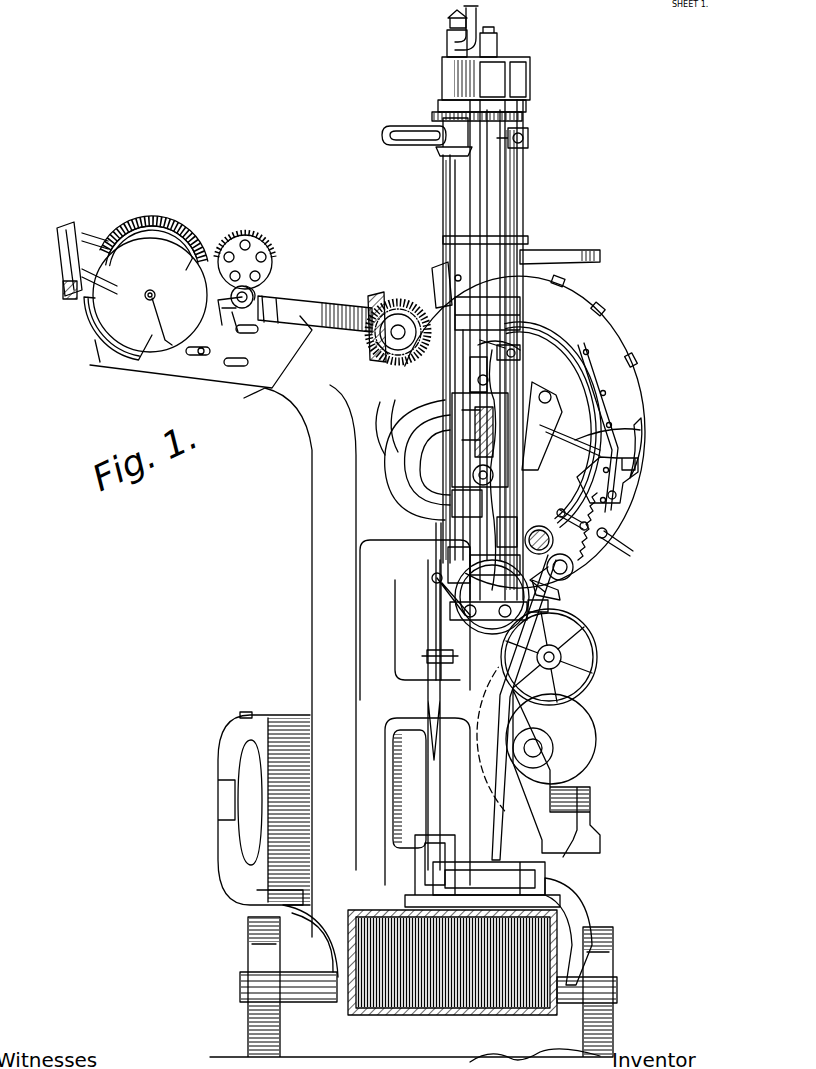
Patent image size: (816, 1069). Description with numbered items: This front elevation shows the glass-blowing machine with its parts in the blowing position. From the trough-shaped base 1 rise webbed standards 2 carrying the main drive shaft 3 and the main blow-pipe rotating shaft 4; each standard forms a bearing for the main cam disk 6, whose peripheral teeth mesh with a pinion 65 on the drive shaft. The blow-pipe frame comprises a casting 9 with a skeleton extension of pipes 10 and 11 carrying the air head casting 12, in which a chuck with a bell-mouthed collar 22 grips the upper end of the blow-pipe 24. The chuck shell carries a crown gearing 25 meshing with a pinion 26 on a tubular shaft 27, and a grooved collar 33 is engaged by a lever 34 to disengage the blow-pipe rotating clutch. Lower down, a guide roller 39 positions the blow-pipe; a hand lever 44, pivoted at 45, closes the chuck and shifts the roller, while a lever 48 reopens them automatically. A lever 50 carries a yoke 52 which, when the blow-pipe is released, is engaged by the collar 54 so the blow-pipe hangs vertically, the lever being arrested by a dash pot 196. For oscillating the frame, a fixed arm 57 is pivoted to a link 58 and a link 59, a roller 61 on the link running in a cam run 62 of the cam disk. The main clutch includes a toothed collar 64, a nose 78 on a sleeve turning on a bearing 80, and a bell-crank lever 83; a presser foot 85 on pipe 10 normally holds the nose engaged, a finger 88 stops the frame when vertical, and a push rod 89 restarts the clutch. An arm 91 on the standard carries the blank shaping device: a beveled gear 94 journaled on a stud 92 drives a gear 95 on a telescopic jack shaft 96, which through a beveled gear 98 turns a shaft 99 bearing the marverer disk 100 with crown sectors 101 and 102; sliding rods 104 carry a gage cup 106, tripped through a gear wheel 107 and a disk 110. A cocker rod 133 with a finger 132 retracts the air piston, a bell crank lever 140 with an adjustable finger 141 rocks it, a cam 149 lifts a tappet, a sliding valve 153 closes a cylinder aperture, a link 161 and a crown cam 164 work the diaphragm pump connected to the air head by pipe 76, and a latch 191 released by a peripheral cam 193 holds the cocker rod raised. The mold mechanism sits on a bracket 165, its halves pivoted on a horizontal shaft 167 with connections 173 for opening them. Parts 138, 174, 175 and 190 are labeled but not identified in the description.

The trough-shaped base 1 is at (462, 1005).
The webbed standard 2 is at (340, 585).
The main drive shaft 3 is at (573, 570).
The main blow-pipe rotating shaft 4 is at (420, 470).
The cam disk 6 is at (562, 420).
The blow-pipe frame casting 9 is at (440, 510).
The pipe 10 is at (470, 198).
The pipe 11 is at (523, 193).
The air head casting 12 is at (452, 78).
The collar 22 is at (448, 152).
The blow-pipe 24 is at (436, 686).
The crown gearing 25 is at (440, 106).
The pinion 26 is at (522, 117).
The tubular shaft 27 is at (500, 162).
The grooved collar 33 is at (522, 345).
The lever 34 is at (520, 350).
The anti-friction roller 39 is at (426, 657).
The hand lever 44 is at (384, 133).
The pivot 45 is at (528, 138).
The lever 48 is at (497, 530).
The lever 50 is at (460, 628).
The yoke 52 is at (432, 590).
The collar 54 is at (470, 555).
The arm 57 is at (600, 450).
The link 58 is at (592, 380).
The link 59 is at (410, 450).
The roller 61 is at (378, 402).
The cam run 62 is at (400, 440).
The collar 64 is at (590, 518).
The pinion 65 is at (633, 554).
The pipe 76 is at (480, 24).
The nose 78 is at (553, 540).
The bearing 80 is at (556, 590).
The bell-crank lever 83 is at (600, 525).
The clutch actuating presser foot 85 is at (598, 254).
The finger 88 is at (545, 612).
The push rod 89 is at (548, 606).
The arm 91 is at (320, 368).
The stud 92 is at (382, 350).
The beveled gear 94 is at (400, 302).
The beveled gear 95 is at (374, 296).
The telescopic jack shaft 96 is at (300, 312).
The beveled gear 98 is at (156, 216).
The shaft 99 is at (145, 300).
The marverer disk 100 is at (158, 305).
The crown sector 101 is at (188, 250).
The crown sector 102 is at (158, 340).
The rods 104 is at (90, 232).
The gage mold or cup 106 is at (63, 300).
The gear wheel 107 is at (262, 243).
The disk 110 is at (252, 296).
The finger 132 is at (490, 33).
The cocker rod 133 is at (478, 222).
The clutch 138 is at (470, 372).
The bell crank lever 140 is at (618, 482).
The adjustable finger 141 is at (646, 438).
The cam 149 is at (600, 360).
The sliding valve 153 is at (455, 604).
The link 161 is at (452, 530).
The crown cam 164 is at (602, 345).
The bracket 165 is at (592, 912).
The horizontal shaft 167 is at (545, 878).
The connections 173 is at (428, 712).
The window 174 is at (404, 856).
The foot plate 175 is at (414, 888).
The pulley 190 is at (548, 748).
The latch 191 is at (495, 278).
The peripheral cam 193 is at (640, 430).
The dash pot 196 is at (540, 630).